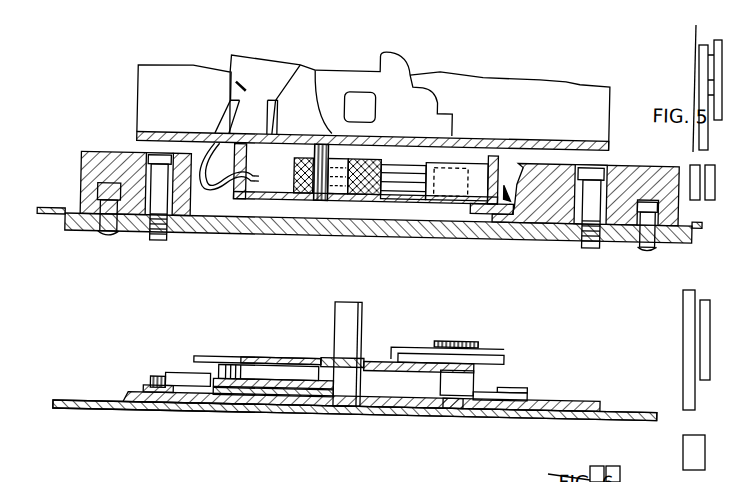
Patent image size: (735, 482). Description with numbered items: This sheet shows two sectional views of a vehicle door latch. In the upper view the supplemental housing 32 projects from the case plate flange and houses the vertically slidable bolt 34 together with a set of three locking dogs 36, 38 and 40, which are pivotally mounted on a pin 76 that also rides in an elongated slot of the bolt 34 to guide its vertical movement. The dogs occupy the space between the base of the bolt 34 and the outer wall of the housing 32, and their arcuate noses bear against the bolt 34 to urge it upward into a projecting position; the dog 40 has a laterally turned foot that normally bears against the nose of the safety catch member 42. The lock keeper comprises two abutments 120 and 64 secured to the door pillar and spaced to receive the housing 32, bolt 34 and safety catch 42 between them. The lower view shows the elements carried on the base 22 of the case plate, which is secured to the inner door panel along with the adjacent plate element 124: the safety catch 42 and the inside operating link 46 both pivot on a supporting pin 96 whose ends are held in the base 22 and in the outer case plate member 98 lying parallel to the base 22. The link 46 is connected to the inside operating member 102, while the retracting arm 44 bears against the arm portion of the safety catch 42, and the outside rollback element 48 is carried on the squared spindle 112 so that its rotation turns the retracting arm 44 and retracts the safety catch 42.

In FIG. 6, the base 22 is at (187, 399).
In FIG. 5, the supplemental housing 32 is at (277, 196).
In FIG. 5, the bolt 34 is at (513, 214).
In FIG. 5, the locking dog 36 is at (397, 183).
In FIG. 5, the locking dog 38 is at (407, 173).
In FIG. 5, the locking dog 40 is at (373, 166).
In FIG. 6, the locking dog 40 is at (395, 410).
In FIG. 5, the safety catch member 42 is at (227, 69).
In FIG. 6, the safety catch member 42 is at (163, 368).
In FIG. 6, the retracting arm 44 is at (497, 414).
In FIG. 6, the inside operating link 46 is at (190, 369).
In FIG. 5, the outside rollback element 48 is at (335, 77).
In FIG. 5, the abutment 64 is at (126, 213).
In FIG. 5, the pin 76 is at (333, 201).
In FIG. 6, the supporting pin 96 is at (247, 353).
In FIG. 6, the outer case plate member 98 is at (263, 353).
In FIG. 6, the inside operating member 102 is at (503, 320).
In FIG. 6, the squared spindle 112 is at (347, 384).
In FIG. 5, the upper abutment 120 is at (618, 201).
In FIG. 6, the base plate 124 is at (118, 407).